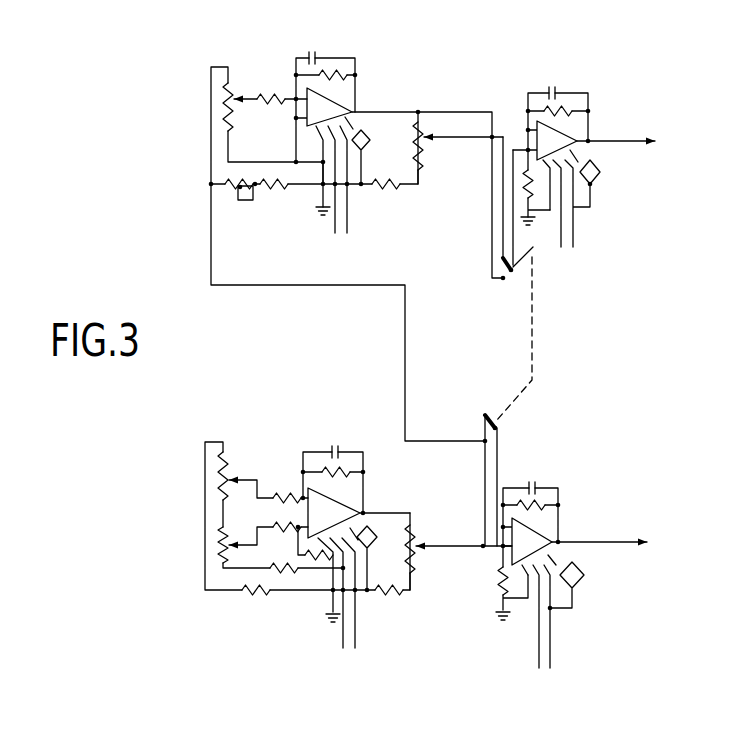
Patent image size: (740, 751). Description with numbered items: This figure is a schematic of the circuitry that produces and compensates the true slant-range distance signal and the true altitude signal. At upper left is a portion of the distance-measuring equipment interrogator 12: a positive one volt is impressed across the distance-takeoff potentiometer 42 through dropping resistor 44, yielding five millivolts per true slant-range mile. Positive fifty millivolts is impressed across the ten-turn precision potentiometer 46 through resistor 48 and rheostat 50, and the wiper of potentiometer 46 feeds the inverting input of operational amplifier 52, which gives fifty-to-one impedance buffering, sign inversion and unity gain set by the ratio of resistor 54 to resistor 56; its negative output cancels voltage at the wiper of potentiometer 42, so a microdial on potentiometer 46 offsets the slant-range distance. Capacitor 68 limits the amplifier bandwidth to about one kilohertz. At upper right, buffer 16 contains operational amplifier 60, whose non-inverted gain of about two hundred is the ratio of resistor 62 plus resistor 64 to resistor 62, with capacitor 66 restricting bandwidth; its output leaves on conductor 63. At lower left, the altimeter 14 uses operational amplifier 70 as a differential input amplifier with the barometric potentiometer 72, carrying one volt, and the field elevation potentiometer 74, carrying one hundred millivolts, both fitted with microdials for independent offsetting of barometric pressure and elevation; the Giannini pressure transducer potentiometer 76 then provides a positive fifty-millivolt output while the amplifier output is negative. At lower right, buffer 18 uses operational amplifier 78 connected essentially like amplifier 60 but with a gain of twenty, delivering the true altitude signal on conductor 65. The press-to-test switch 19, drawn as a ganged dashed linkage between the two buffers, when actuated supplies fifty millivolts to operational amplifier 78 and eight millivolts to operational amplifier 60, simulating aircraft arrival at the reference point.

The distance-measuring equipment interrogator 12 is at (181, 229).
The altimeter 14 is at (208, 611).
The buffer 16 is at (620, 195).
The buffer 18 is at (625, 634).
The press-to-test switch 19 is at (533, 320).
The distance-takeoff potentiometer 42 is at (441, 153).
The dropping resistor 44 is at (390, 188).
The ten-turn precision potentiometer 46 is at (223, 113).
The resistor 48 is at (256, 200).
The rheostat 50 is at (238, 183).
The operational amplifier 52 is at (340, 104).
The resistor 54 is at (338, 76).
The resistor 56 is at (277, 90).
The operational amplifier 60 is at (575, 140).
The resistor 62 is at (527, 190).
The conductor 63 is at (629, 148).
The resistor 64 is at (568, 111).
The conductor 65 is at (614, 541).
The capacitor 66 is at (556, 91).
The capacitor 68 is at (308, 52).
The operational amplifier 70 is at (340, 503).
The barometric potentiometer 72 is at (220, 492).
The field elevation potentiometer 74 is at (220, 543).
The potentiometer 76 is at (415, 570).
The operational amplifier 78 is at (543, 533).